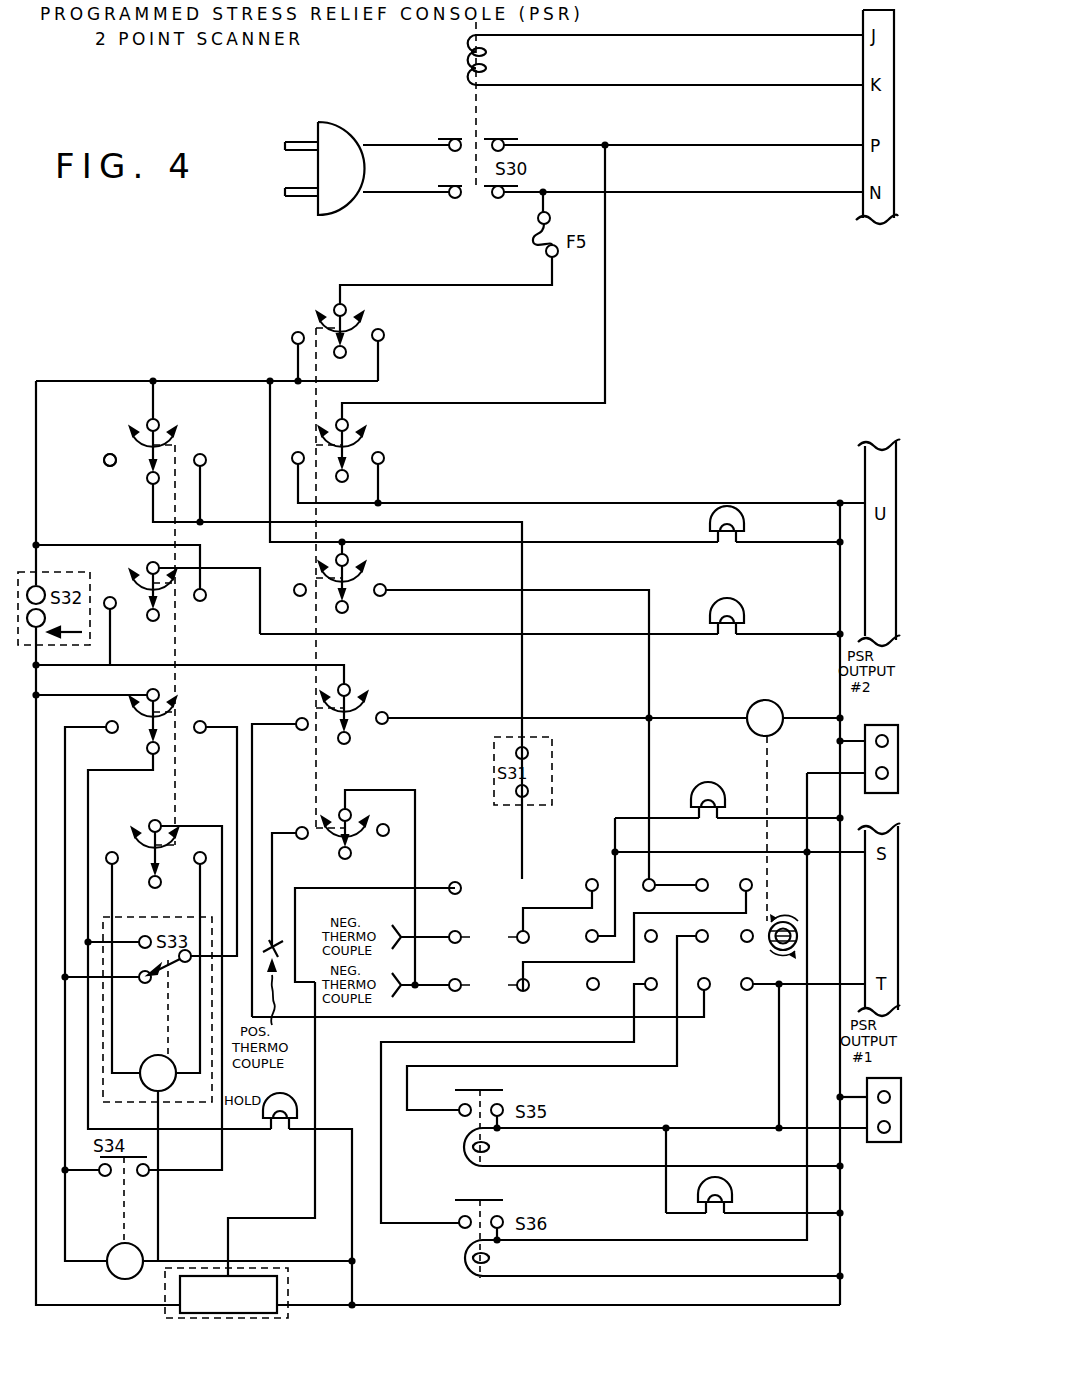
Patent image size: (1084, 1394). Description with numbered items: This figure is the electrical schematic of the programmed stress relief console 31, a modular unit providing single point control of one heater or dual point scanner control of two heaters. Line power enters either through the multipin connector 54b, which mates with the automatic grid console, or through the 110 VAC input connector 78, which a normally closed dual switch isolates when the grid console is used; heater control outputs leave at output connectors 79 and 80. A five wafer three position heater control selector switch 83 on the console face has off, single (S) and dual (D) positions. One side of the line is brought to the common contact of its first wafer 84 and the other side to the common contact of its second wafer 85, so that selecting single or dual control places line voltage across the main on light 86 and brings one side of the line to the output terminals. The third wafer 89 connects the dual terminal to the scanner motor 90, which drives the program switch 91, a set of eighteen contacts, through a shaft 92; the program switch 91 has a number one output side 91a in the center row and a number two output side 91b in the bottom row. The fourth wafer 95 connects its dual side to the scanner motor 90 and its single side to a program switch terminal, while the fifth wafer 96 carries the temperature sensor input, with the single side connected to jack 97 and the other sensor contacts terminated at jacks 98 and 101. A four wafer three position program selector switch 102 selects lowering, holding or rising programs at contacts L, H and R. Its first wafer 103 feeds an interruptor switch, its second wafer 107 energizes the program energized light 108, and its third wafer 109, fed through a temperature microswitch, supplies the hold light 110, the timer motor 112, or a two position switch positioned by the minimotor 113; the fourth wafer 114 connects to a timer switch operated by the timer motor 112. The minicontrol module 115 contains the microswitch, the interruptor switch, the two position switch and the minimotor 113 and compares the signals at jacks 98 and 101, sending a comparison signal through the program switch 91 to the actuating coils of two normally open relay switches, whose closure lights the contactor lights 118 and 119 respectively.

The programmed stress relief console 31 is at (258, 283).
The multipin connector 54b is at (863, 16).
The 110 VAC input connector 78 is at (350, 140).
The output connector 79 is at (846, 1040).
The output connector 80 is at (846, 700).
The heater control selector switch 83 is at (314, 331).
The first wafer 84 is at (357, 333).
The second wafer 85 is at (357, 451).
The main on light 86 is at (737, 508).
The third wafer 89 is at (365, 586).
The scanner motor 90 is at (781, 714).
The program switch 91 is at (585, 889).
The number 1 output side 91a is at (489, 937).
The number 2 output side 91b is at (489, 985).
The shaft 92 is at (790, 922).
The fourth wafer 95 is at (369, 707).
The fifth wafer 96 is at (353, 820).
The jack 97 is at (274, 944).
The jack 98 is at (392, 933).
The jack 101 is at (403, 994).
The program selector switch 102 is at (171, 452).
The first wafer 103 is at (112, 456).
The second wafer 107 is at (136, 592).
The program energized light 108 is at (742, 613).
The third wafer 109 is at (136, 726).
The hold light 110 is at (298, 1106).
The timer motor 112 is at (116, 1245).
The minimotor 113 is at (154, 1056).
The fourth wafer 114 is at (138, 854).
The minicontrol module 115 is at (32, 572).
The contactor light 118 is at (730, 1200).
The contactor light 119 is at (710, 791).